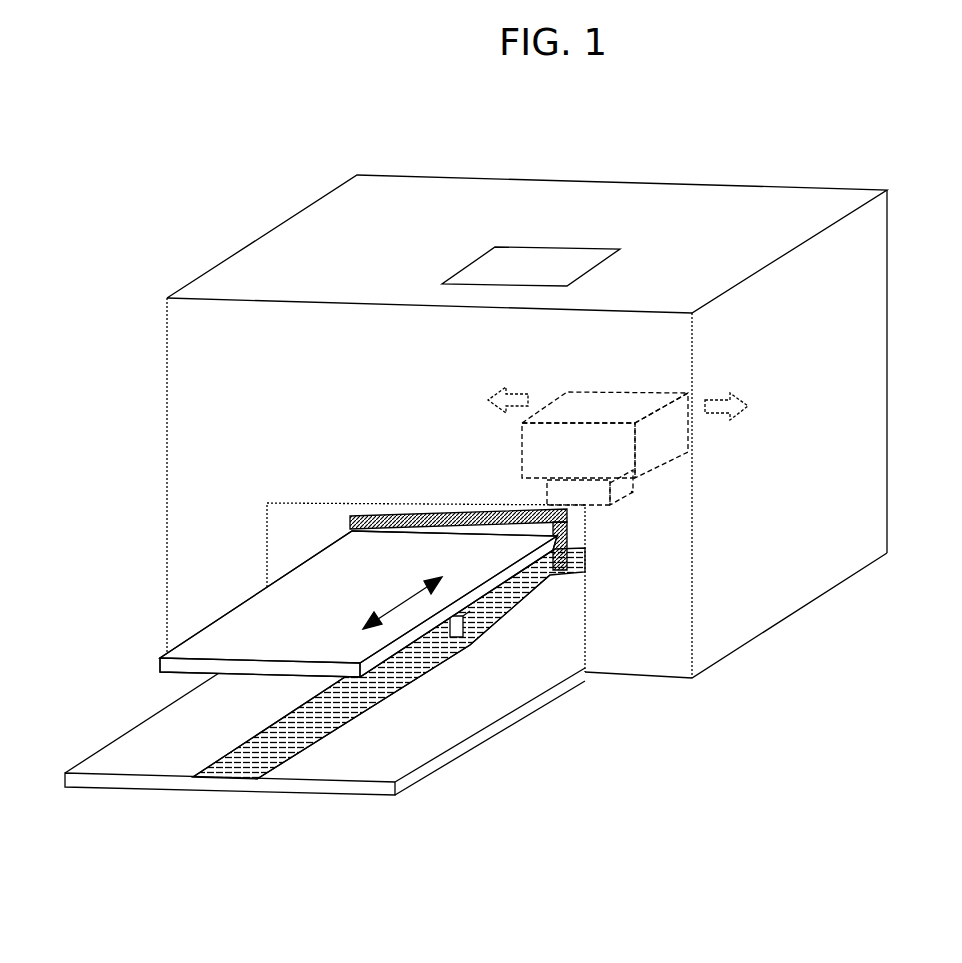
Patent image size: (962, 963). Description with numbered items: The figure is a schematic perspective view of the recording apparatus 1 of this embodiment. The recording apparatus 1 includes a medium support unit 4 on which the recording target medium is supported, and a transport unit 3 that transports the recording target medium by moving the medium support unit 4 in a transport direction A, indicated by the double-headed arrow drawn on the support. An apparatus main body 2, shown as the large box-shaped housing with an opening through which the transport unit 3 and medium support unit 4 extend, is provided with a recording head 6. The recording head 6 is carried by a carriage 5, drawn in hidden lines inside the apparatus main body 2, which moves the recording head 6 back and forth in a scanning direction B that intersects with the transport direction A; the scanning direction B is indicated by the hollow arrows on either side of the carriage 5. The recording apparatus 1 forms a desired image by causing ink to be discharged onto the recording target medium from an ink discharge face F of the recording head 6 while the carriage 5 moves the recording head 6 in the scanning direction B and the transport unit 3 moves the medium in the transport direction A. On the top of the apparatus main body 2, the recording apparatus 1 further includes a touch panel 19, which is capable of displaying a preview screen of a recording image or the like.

The recording apparatus 1 is at (278, 170).
The apparatus main body 2 is at (858, 262).
The transport unit 3 is at (462, 752).
The medium support unit 4 is at (190, 668).
The carriage 5 is at (637, 405).
The recording head 6 is at (593, 492).
The touch panel 19 is at (543, 260).
The transport direction A is at (408, 598).
The scanning direction B is at (748, 418).
The ink discharge face F is at (632, 492).